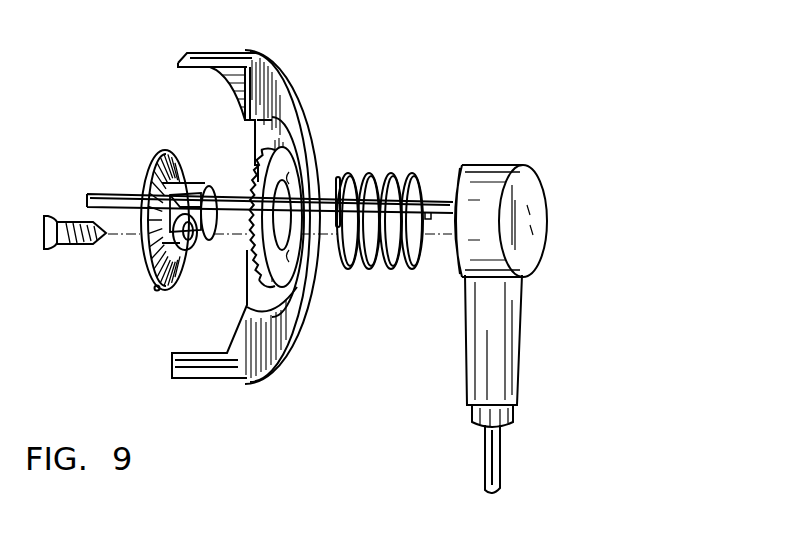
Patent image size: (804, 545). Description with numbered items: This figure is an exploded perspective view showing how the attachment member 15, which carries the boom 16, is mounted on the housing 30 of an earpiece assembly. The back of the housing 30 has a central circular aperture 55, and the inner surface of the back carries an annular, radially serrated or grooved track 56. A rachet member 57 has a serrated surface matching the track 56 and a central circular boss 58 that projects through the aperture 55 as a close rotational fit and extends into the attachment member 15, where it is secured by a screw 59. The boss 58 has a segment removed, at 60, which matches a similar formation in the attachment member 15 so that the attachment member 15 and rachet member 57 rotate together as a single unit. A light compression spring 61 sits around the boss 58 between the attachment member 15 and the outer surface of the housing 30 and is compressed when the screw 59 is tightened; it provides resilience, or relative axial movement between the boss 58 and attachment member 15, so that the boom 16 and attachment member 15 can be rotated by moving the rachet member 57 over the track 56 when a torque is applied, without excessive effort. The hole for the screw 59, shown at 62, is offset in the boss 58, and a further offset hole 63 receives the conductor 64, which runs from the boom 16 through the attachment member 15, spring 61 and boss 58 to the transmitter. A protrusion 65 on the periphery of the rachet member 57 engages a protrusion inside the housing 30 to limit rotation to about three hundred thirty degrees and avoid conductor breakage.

The attachment member 15 is at (463, 294).
The boom 16 is at (488, 453).
The housing 30 is at (231, 50).
The central circular aperture 55 is at (300, 287).
The annular radially serrated track 56 is at (289, 186).
The rachet member 57 is at (152, 212).
The central circular boss 58 is at (204, 208).
The screw 59 is at (82, 240).
The removed segment 60 is at (148, 178).
The light compression spring 61 is at (393, 172).
The screw hole 62 is at (204, 244).
The offset hole 63 is at (210, 186).
The conductor 64 is at (108, 194).
The protrusion 65 is at (159, 291).